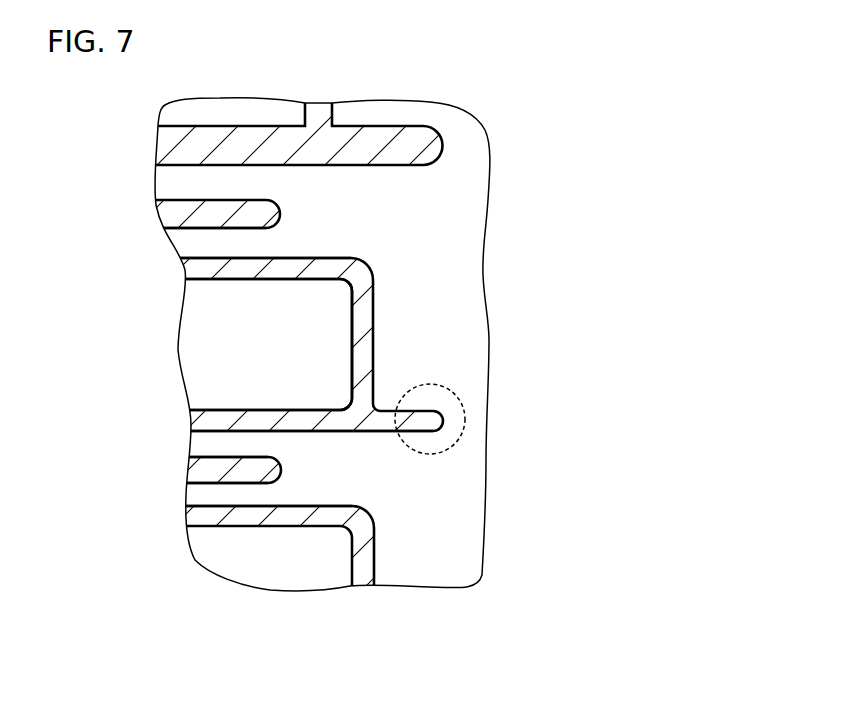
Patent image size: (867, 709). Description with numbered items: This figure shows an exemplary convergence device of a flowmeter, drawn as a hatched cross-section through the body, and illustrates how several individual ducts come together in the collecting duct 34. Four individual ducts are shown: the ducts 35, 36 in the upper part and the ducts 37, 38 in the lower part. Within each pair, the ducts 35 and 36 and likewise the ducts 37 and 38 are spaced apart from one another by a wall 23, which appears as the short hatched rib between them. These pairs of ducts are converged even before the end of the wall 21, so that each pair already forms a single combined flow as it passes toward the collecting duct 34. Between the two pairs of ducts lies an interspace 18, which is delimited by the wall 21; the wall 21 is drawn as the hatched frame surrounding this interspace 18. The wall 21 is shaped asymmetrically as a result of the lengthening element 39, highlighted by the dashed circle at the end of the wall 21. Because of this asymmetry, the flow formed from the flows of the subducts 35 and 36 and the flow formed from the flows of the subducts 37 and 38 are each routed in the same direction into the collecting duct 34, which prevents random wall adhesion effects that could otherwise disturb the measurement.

The collecting duct 34 is at (453, 225).
The duct 35 is at (173, 187).
The wall 23 is at (177, 213).
The duct 36 is at (192, 247).
The wall 21 is at (363, 348).
The interspace 18 is at (213, 353).
The lengthening element 39 is at (462, 405).
The duct 37 is at (213, 445).
The duct 38 is at (213, 497).